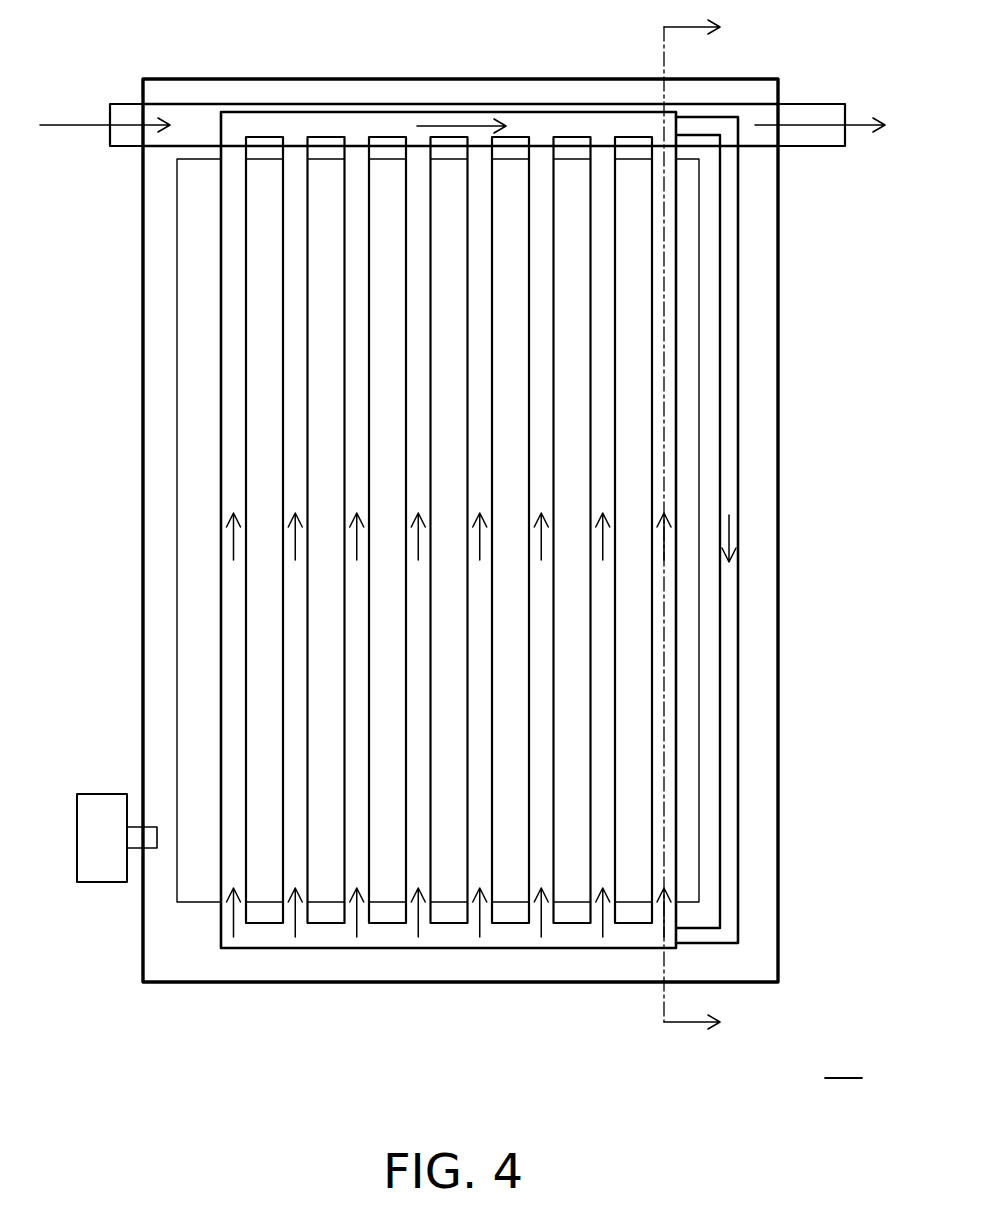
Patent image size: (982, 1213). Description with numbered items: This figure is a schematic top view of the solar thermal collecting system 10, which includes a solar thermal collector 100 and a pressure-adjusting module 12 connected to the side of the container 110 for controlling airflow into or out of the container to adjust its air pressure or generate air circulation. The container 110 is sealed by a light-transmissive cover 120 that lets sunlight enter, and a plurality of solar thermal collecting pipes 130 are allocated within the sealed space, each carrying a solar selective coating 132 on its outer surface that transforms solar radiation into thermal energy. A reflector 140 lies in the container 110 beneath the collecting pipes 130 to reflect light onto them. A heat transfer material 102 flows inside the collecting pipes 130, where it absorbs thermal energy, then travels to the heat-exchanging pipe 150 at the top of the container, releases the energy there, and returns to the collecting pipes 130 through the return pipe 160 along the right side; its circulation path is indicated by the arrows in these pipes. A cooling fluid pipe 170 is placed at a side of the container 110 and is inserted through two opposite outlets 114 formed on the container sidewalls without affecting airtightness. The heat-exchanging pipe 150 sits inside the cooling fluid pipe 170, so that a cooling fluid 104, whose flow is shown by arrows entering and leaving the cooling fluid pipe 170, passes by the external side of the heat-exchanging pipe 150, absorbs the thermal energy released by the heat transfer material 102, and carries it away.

The solar thermal collector 100 is at (117, 480).
The container 110 is at (780, 312).
The light-transmissive cover 120 is at (768, 247).
The solar thermal collecting pipes 130 is at (668, 458).
The solar selective coating 132 is at (666, 376).
The reflector 140 is at (176, 314).
The heat-exchanging pipe 150 is at (569, 125).
The return pipe 160 is at (730, 597).
The cooling fluid pipe 170 is at (199, 120).
The heat transfer material 102 is at (233, 545).
The cooling fluid 104 is at (64, 123).
The outlets 114 is at (129, 139).
The pressure-adjusting module 12 is at (105, 806).
The solar thermal collecting system 10 is at (843, 1059).